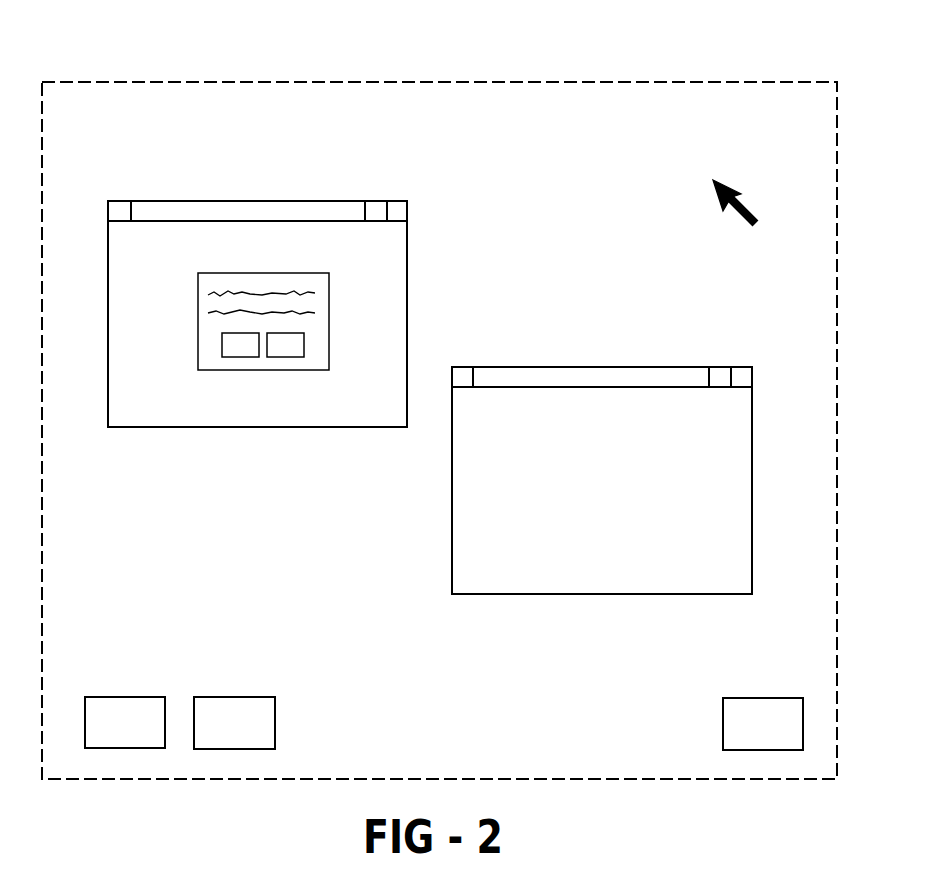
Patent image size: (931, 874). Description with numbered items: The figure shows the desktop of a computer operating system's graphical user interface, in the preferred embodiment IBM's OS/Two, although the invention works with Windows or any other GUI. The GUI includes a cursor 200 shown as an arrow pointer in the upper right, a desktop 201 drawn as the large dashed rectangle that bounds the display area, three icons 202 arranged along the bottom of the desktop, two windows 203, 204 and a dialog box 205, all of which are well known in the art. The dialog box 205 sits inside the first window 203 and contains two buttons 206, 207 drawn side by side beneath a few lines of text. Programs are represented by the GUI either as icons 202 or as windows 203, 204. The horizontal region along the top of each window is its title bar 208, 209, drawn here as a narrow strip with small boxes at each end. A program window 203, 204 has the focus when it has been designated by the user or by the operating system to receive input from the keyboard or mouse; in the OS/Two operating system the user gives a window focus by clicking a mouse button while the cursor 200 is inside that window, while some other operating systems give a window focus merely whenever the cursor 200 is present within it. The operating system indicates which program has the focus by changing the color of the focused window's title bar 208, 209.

The cursor 200 is at (744, 203).
The desktop 201 is at (297, 82).
The icons 202 is at (133, 697).
The window 203 is at (108, 375).
The window 204 is at (752, 485).
The dialog box 205 is at (198, 308).
The button 206 is at (241, 357).
The button 207 is at (285, 357).
The title bar 208 is at (115, 212).
The title bar 209 is at (741, 374).